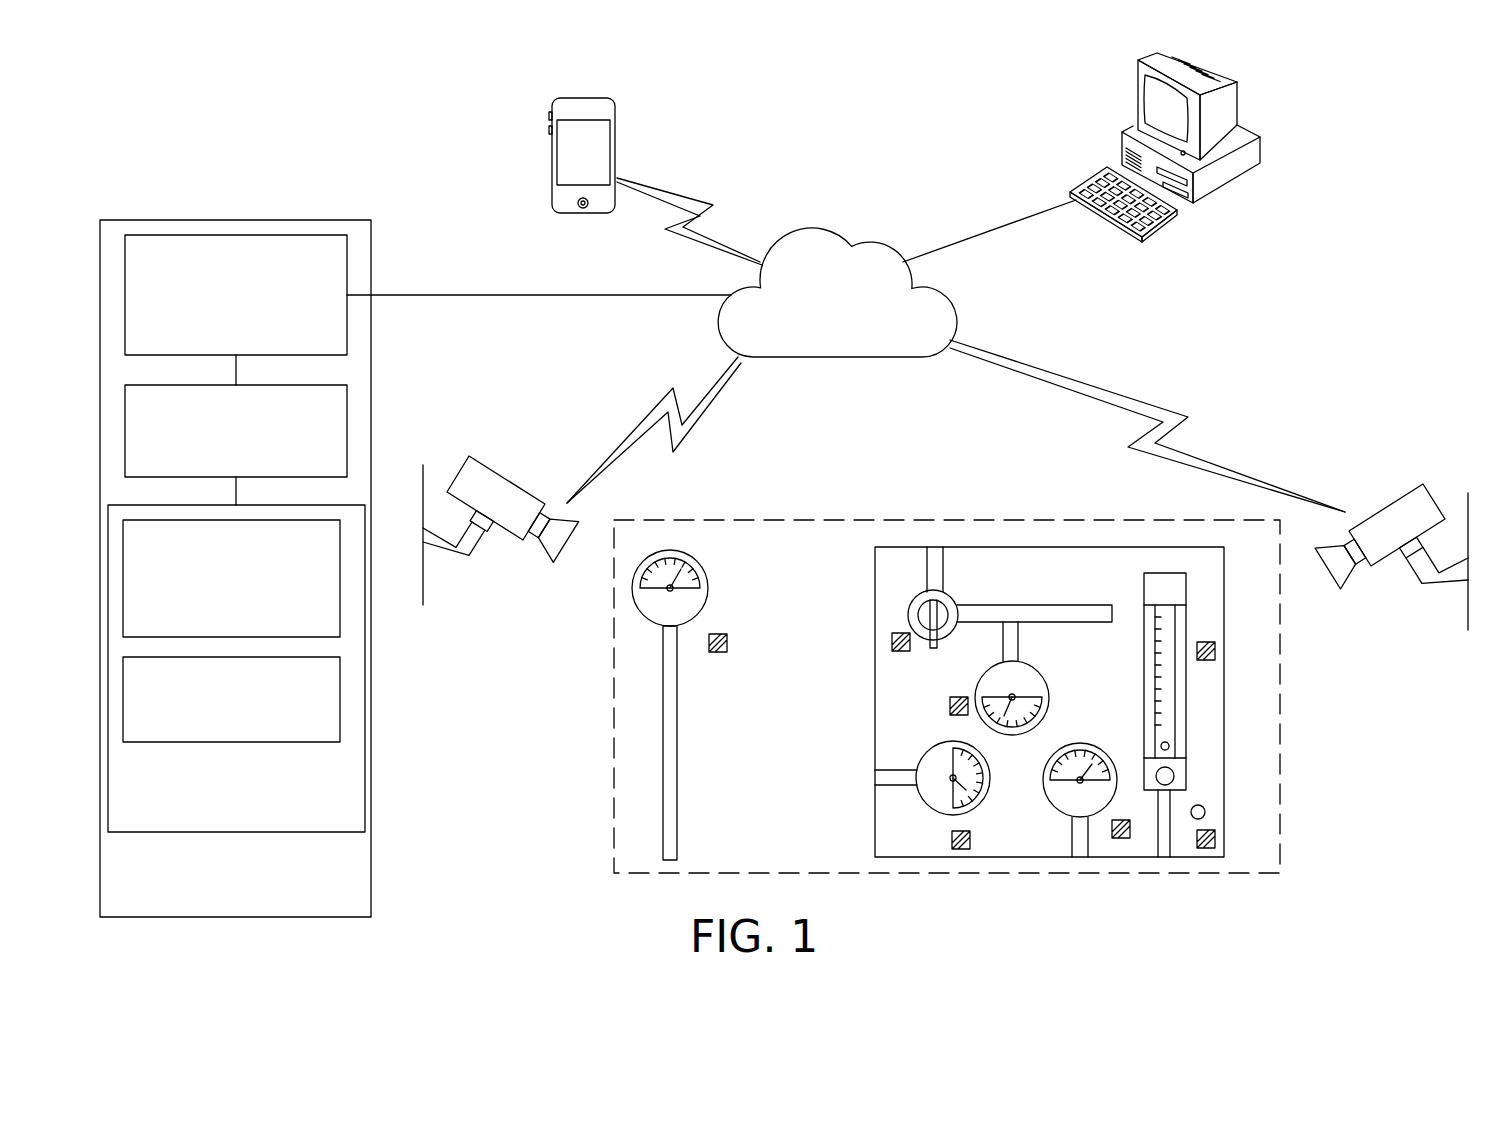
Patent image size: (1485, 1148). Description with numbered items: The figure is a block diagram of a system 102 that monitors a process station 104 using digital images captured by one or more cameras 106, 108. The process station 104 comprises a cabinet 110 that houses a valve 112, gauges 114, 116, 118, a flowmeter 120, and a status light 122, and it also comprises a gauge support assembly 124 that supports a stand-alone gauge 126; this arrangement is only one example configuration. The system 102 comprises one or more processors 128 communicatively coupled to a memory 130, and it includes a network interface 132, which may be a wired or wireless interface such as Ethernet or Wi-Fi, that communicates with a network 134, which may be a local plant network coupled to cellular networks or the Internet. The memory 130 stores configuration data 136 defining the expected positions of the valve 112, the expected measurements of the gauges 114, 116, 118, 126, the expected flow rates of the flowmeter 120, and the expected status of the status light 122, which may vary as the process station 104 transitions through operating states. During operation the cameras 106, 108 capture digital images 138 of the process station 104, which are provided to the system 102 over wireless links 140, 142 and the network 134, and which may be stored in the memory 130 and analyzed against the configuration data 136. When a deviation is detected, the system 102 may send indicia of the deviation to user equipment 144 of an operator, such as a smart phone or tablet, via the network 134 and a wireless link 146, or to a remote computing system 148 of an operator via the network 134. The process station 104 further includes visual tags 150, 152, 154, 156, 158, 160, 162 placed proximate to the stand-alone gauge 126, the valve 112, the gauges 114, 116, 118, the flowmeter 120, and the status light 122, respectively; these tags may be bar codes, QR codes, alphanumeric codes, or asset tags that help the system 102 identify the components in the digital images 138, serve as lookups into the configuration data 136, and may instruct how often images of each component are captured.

The system 102 is at (213, 905).
The process station 104 is at (862, 520).
The camera 106 is at (499, 472).
The camera 108 is at (1382, 500).
The cabinet 110 is at (1224, 748).
The valve 112 is at (933, 648).
The gauge 114 is at (975, 688).
The gauge 116 is at (918, 803).
The gauge 118 is at (1058, 813).
The flowmeter 120 is at (1186, 690).
The status light 122 is at (1205, 812).
The gauge support assembly 124 is at (662, 712).
The stand-alone gauge 126 is at (640, 611).
The processors 128 is at (213, 467).
The memory 130 is at (213, 819).
The network interface 132 is at (213, 345).
The network 134 is at (814, 341).
The configuration data 136 is at (213, 627).
The digital images 138 is at (213, 732).
The wireless link 140 is at (630, 430).
The wireless link 142 is at (1132, 398).
The user equipment 144 is at (552, 158).
The wireless link 146 is at (683, 195).
The remote computing system 148 is at (1237, 107).
The visual tag 150 is at (708, 638).
The visual tag 152 is at (892, 641).
The visual tag 154 is at (950, 707).
The visual tag 156 is at (961, 849).
The visual tag 158 is at (1121, 838).
The visual tag 160 is at (1215, 650).
The visual tag 162 is at (1206, 848).